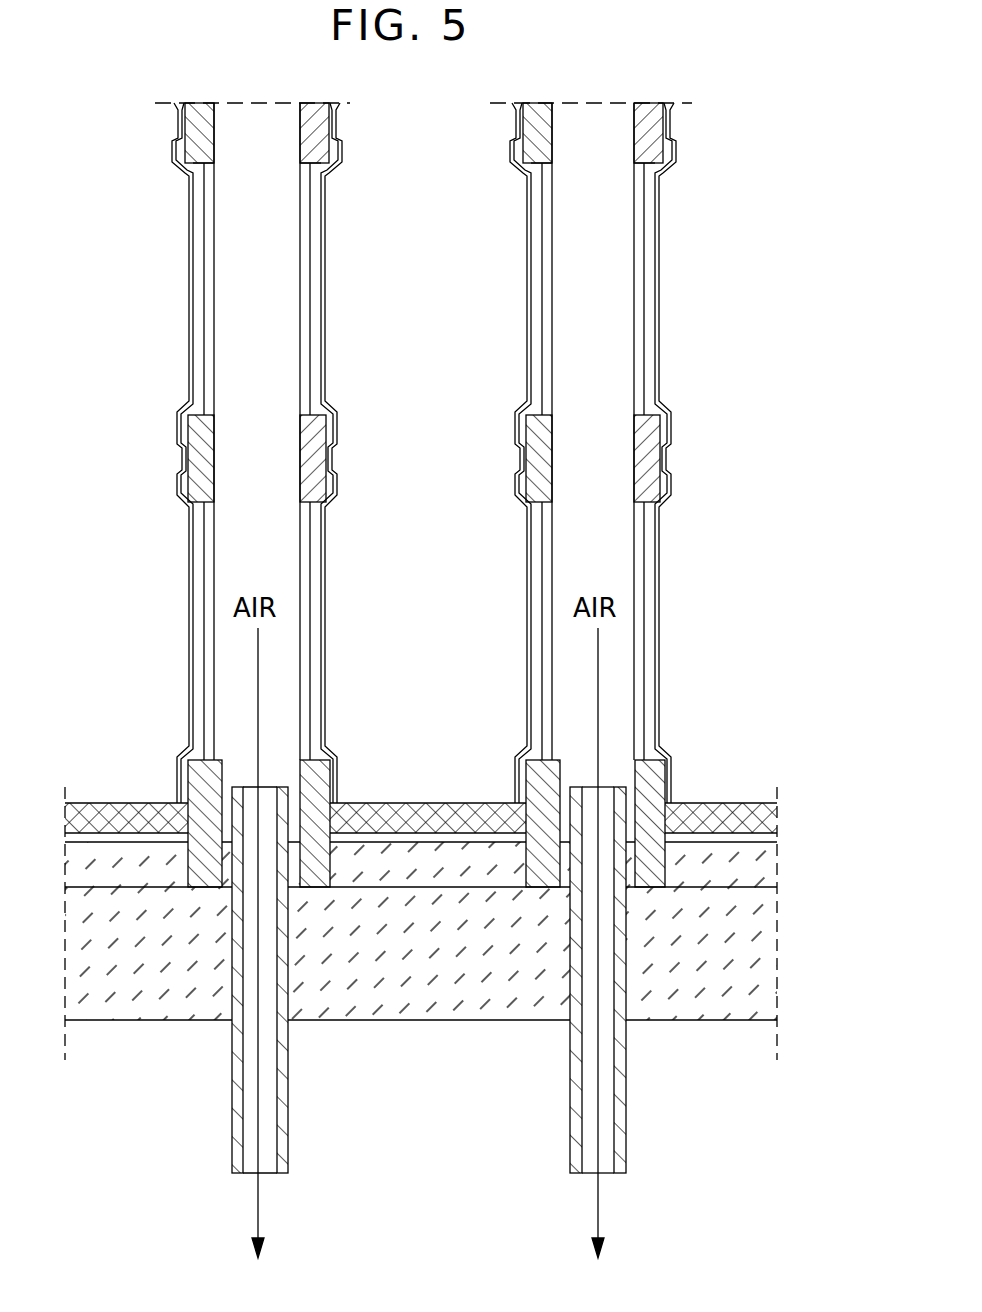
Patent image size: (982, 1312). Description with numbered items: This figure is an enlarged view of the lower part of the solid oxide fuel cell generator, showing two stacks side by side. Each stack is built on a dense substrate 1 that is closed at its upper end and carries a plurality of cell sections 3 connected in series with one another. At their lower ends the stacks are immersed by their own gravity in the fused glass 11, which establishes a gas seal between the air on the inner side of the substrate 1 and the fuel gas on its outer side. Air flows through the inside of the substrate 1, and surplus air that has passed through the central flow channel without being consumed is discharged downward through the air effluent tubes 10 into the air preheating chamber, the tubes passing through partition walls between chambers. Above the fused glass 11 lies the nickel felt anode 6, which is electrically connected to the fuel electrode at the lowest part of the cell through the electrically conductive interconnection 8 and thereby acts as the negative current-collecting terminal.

The dense substrate 1 is at (655, 458).
The cell section 3 is at (325, 628).
The anode of nickel felt 6 is at (753, 802).
The electrically conductive interconnection 8 is at (672, 797).
The air effluent tube 10 is at (285, 1135).
The fused glass 11 is at (456, 931).